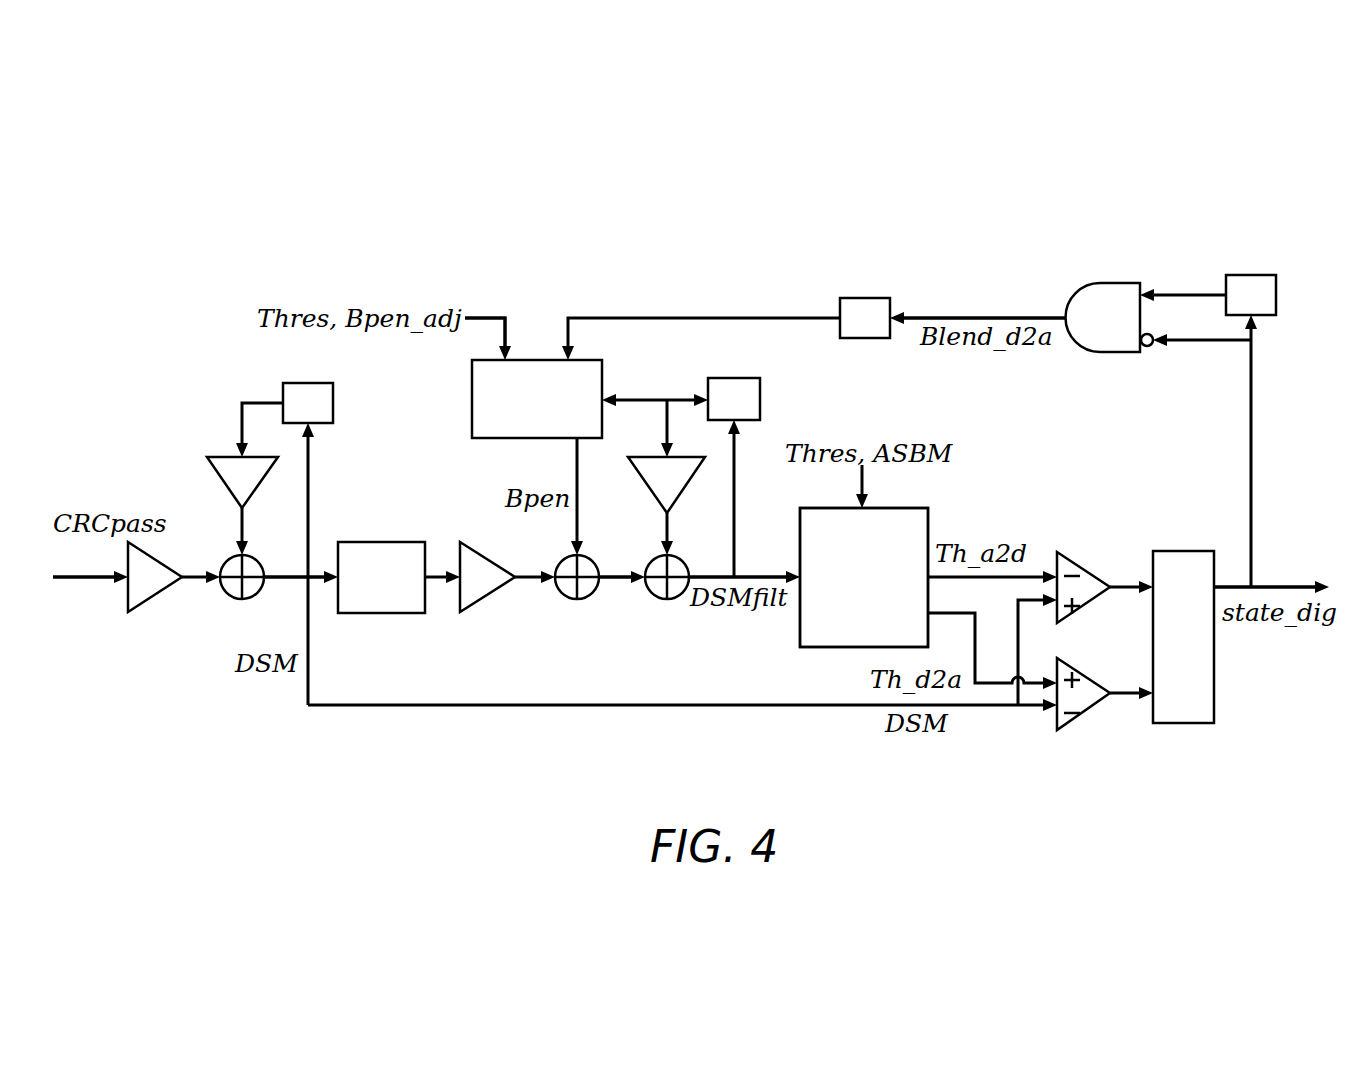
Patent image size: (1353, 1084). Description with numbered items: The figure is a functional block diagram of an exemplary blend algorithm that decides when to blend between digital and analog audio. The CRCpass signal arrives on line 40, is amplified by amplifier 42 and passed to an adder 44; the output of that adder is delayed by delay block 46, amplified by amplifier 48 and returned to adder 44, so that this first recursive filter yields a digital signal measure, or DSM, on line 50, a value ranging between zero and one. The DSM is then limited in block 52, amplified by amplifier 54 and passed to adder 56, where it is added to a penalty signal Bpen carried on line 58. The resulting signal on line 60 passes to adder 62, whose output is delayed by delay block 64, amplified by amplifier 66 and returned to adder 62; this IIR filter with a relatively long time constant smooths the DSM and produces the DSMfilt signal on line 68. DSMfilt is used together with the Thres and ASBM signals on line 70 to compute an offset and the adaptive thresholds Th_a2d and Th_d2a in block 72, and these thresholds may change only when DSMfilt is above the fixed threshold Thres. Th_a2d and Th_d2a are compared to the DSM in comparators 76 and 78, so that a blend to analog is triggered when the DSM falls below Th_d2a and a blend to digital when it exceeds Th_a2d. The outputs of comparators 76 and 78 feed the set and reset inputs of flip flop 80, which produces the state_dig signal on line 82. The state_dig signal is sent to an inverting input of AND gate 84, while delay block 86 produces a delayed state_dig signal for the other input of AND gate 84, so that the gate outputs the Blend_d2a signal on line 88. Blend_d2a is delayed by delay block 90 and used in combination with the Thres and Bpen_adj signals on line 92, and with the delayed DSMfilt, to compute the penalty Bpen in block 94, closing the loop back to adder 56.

The line 40 is at (87, 579).
The amplifier 42 is at (160, 598).
The adder 44 is at (226, 595).
The delay block 46 is at (333, 416).
The amplifier 48 is at (208, 482).
The line 50 is at (285, 575).
The limit block 52 is at (378, 614).
The amplifier 54 is at (490, 596).
The adder 56 is at (567, 594).
The line 58 is at (578, 531).
The line 60 is at (613, 580).
The adder 62 is at (650, 595).
The delay block 64 is at (760, 396).
The amplifier 66 is at (683, 480).
The line 68 is at (766, 575).
The line 70 is at (866, 480).
The block 72 is at (820, 652).
The comparator 76 is at (1090, 566).
The comparator 78 is at (1080, 712).
The flip flop 80 is at (1214, 684).
The line 82 is at (1280, 577).
The AND gate 84 is at (1116, 282).
The delay block 86 is at (1251, 274).
The line 88 is at (986, 317).
The delay block 90 is at (865, 297).
The line 92 is at (485, 318).
The block 94 is at (472, 410).